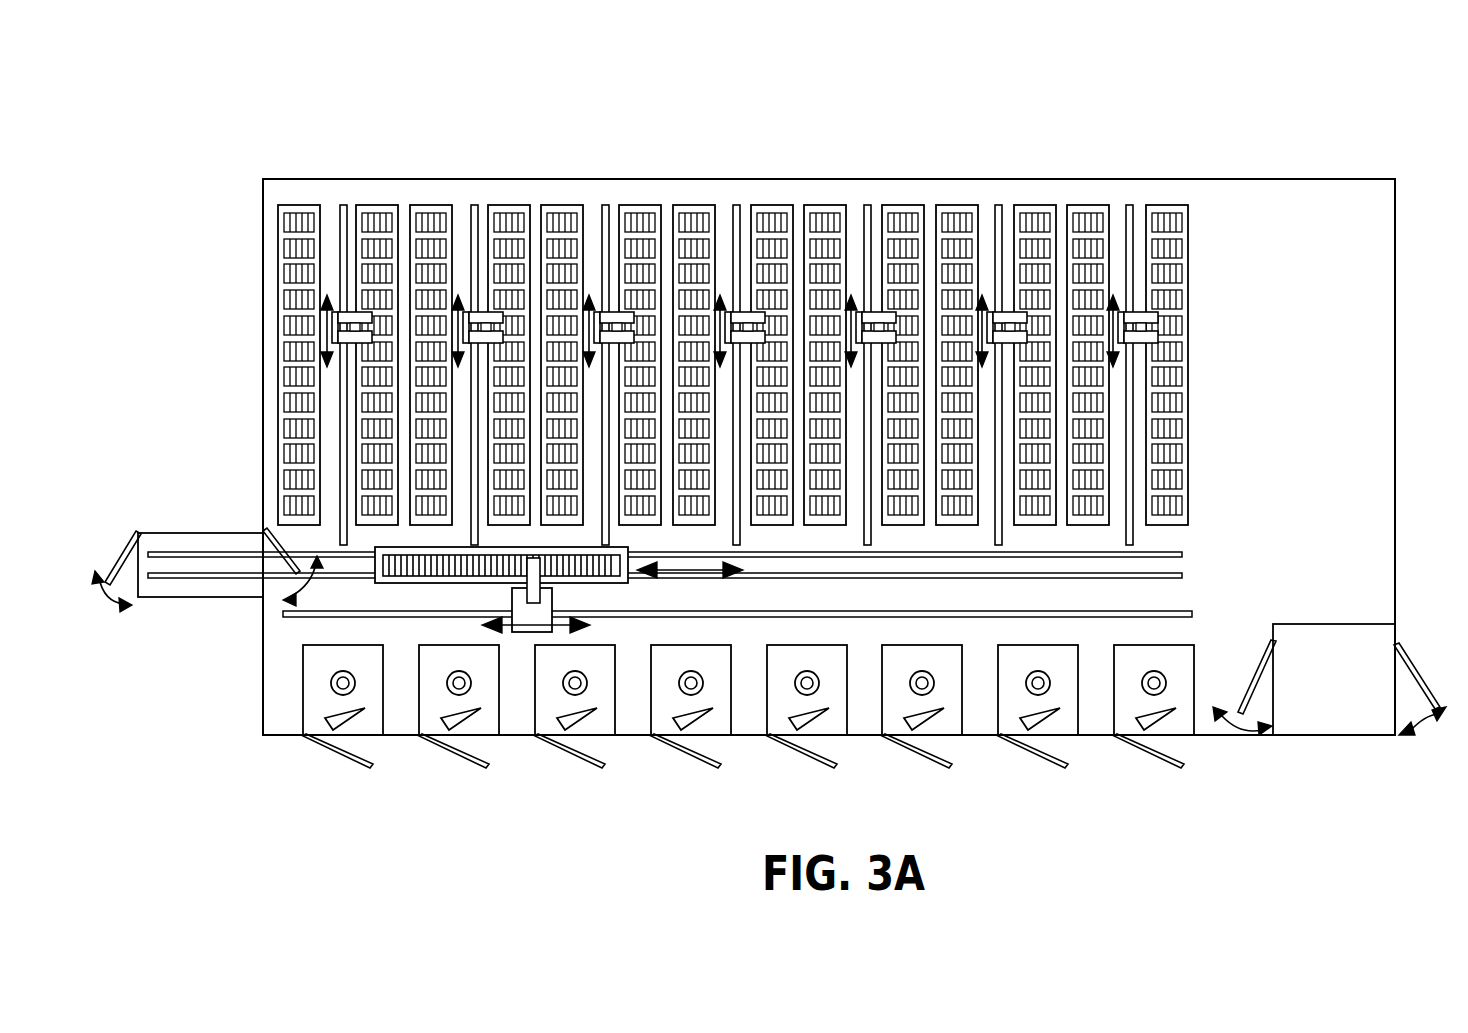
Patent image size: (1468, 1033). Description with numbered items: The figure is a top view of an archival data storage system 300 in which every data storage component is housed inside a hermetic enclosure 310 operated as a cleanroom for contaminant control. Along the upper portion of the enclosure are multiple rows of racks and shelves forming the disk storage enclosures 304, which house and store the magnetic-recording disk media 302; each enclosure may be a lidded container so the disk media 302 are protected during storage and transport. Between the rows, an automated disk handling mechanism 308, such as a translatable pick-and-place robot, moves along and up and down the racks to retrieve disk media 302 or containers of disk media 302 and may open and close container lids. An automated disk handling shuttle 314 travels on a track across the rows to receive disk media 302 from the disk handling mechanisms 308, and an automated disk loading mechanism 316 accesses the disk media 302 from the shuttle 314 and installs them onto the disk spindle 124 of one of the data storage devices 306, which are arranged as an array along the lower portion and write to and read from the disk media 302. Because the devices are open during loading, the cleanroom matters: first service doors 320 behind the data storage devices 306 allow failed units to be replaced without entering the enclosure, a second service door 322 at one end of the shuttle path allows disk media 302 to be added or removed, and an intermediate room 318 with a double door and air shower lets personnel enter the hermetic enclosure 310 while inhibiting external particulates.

The data storage system 300 is at (276, 72).
The magnetic-recording disk media 302 is at (304, 195).
The disk storage enclosures 304 is at (280, 220).
The data storage devices 306 is at (360, 725).
The automated disk handling mechanism 308 is at (350, 330).
The hermetic enclosure 310 is at (1397, 400).
The automated disk handling shuttle 314 is at (372, 548).
The automated disk loading mechanism 316 is at (515, 606).
The intermediate room 318 is at (1367, 670).
The first service door 320 is at (446, 766).
The second service door 322 is at (122, 542).
The disk spindle 124 is at (340, 683).